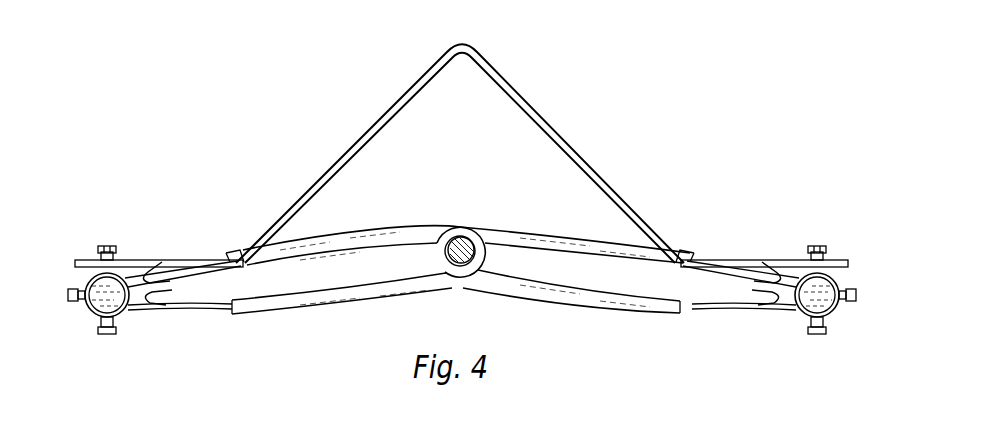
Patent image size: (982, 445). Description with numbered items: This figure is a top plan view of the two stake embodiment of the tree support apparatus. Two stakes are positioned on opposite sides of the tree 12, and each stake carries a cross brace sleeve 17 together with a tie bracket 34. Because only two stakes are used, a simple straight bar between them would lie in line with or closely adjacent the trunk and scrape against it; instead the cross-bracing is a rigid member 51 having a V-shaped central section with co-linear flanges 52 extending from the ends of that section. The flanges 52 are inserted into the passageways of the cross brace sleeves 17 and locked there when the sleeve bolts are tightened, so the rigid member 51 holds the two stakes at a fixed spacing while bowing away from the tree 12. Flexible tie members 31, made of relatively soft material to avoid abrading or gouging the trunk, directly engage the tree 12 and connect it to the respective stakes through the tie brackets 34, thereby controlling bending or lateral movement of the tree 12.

The tree 12 is at (462, 237).
The cross brace sleeve 17 is at (98, 258).
The flexible tie member 31 is at (594, 324).
The tie bracket 34 is at (126, 313).
The rigid member 51 is at (360, 124).
The co-linear flanges 52 is at (181, 260).